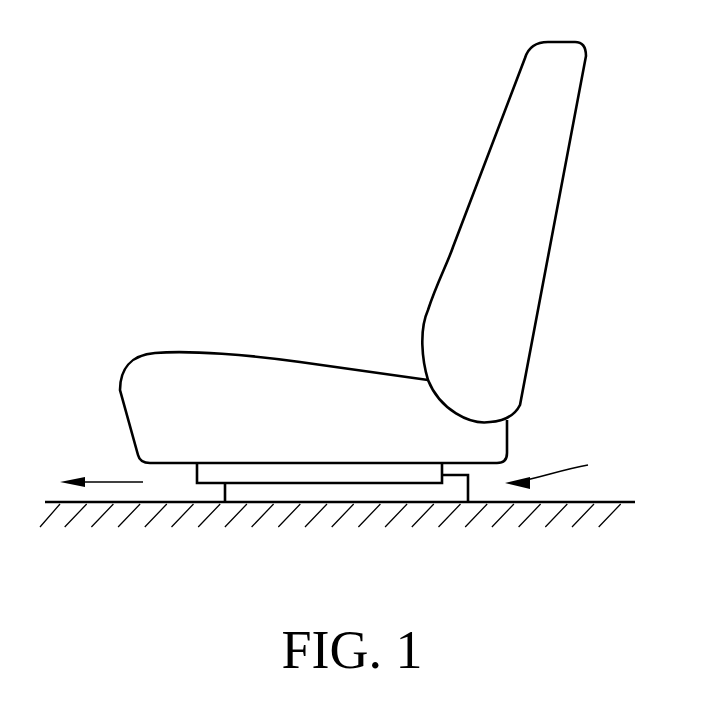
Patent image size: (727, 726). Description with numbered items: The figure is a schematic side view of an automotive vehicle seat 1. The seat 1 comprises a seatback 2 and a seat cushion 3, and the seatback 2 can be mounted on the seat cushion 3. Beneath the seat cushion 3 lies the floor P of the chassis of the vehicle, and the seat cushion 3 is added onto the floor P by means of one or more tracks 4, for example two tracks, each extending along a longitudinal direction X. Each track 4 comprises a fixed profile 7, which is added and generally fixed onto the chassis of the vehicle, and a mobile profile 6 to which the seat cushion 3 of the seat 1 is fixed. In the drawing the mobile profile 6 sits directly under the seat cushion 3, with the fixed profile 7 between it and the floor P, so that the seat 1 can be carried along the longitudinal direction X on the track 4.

The automotive vehicle seat 1 is at (382, 128).
The seatback 2 is at (550, 140).
The seat cushion 3 is at (227, 378).
The track 4 is at (554, 467).
The mobile profile 6 is at (270, 487).
The fixed profile 7 is at (378, 492).
The floor P is at (485, 503).
The longitudinal direction X is at (88, 483).